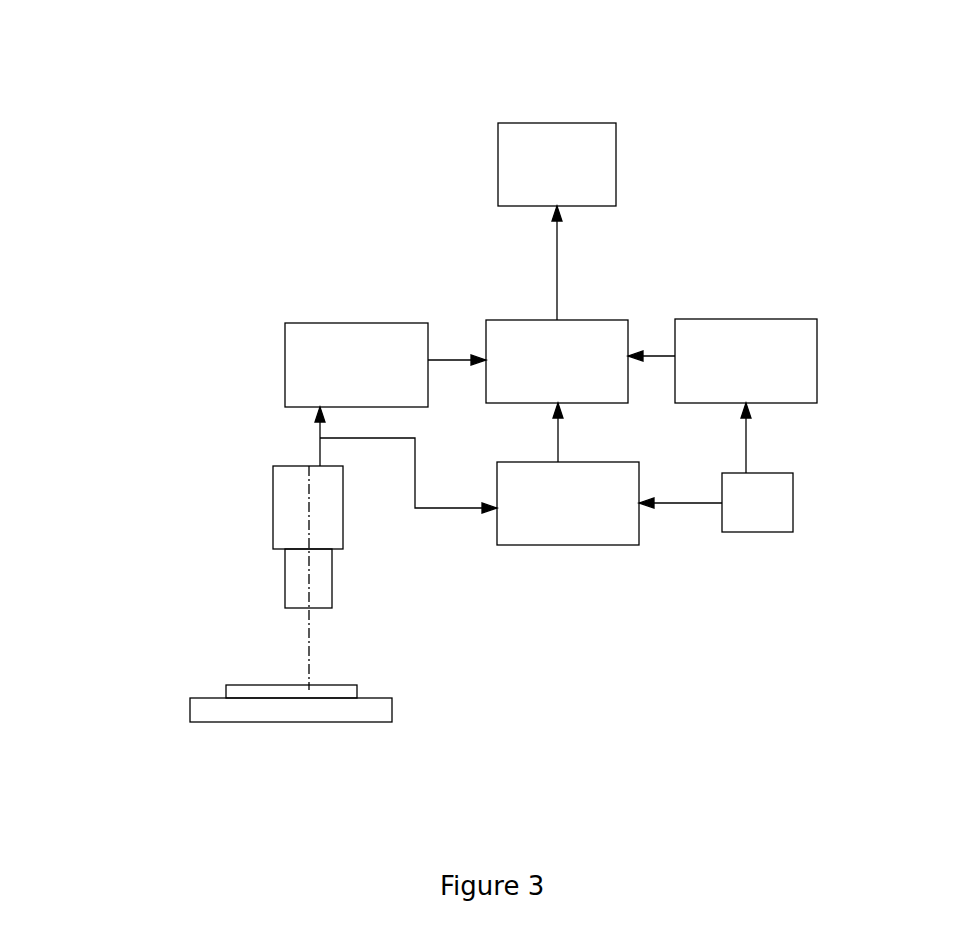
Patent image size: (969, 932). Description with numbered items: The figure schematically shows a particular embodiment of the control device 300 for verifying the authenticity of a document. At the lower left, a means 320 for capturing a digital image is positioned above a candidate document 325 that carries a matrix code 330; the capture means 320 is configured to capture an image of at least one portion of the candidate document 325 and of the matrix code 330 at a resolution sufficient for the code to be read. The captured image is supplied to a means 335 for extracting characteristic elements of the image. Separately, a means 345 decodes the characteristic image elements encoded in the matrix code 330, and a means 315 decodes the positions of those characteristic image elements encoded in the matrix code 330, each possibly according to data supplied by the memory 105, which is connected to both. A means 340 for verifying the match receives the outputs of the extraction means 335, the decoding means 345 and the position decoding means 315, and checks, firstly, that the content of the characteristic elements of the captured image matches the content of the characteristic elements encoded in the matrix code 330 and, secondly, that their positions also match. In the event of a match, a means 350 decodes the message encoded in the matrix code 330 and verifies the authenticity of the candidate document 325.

The control device 300 is at (250, 130).
The means for decoding the message and verifying authenticity 350 is at (545, 135).
The means for extracting characteristic elements 335 is at (392, 337).
The means for verifying the match 340 is at (592, 335).
The means for decoding positions of characteristic image elements 315 is at (782, 335).
The means for decoding characteristic image elements 345 is at (580, 533).
The memory 105 is at (757, 518).
The means for capturing a digital image 320 is at (297, 513).
The candidate document 325 is at (202, 711).
The matrix code 330 is at (284, 692).